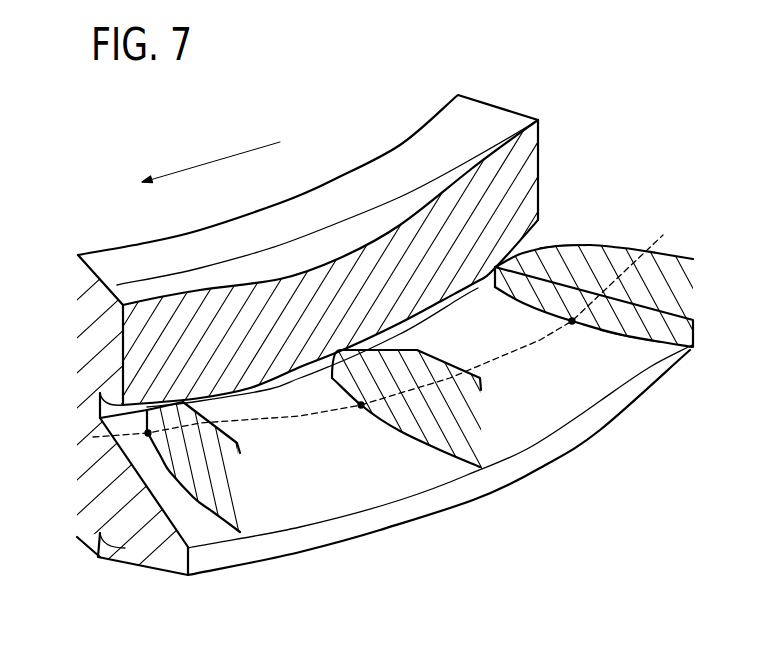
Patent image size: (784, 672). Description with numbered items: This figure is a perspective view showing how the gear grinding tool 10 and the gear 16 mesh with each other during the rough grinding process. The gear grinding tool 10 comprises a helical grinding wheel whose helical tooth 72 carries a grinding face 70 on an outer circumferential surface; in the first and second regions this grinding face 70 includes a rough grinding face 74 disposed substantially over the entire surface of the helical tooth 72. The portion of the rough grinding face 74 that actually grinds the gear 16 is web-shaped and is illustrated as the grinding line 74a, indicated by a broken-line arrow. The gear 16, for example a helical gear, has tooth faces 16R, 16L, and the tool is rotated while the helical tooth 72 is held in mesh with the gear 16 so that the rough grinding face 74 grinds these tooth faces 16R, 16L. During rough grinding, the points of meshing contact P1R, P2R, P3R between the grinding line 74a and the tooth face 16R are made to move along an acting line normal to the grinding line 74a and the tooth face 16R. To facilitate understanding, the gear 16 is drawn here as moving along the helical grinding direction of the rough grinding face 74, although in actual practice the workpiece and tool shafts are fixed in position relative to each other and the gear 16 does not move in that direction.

The gear grinding tool 10 is at (332, 122).
The gear 16 is at (697, 280).
The tooth face 16L is at (565, 247).
The tooth face 16R is at (513, 302).
The grinding face 70 is at (328, 498).
The helical tooth 72 is at (247, 548).
The rough grinding face 74 is at (453, 337).
The grinding line 74a is at (663, 235).
The point of meshing contact P1R is at (572, 322).
The point of meshing contact P2R is at (361, 407).
The point of meshing contact P3R is at (148, 433).